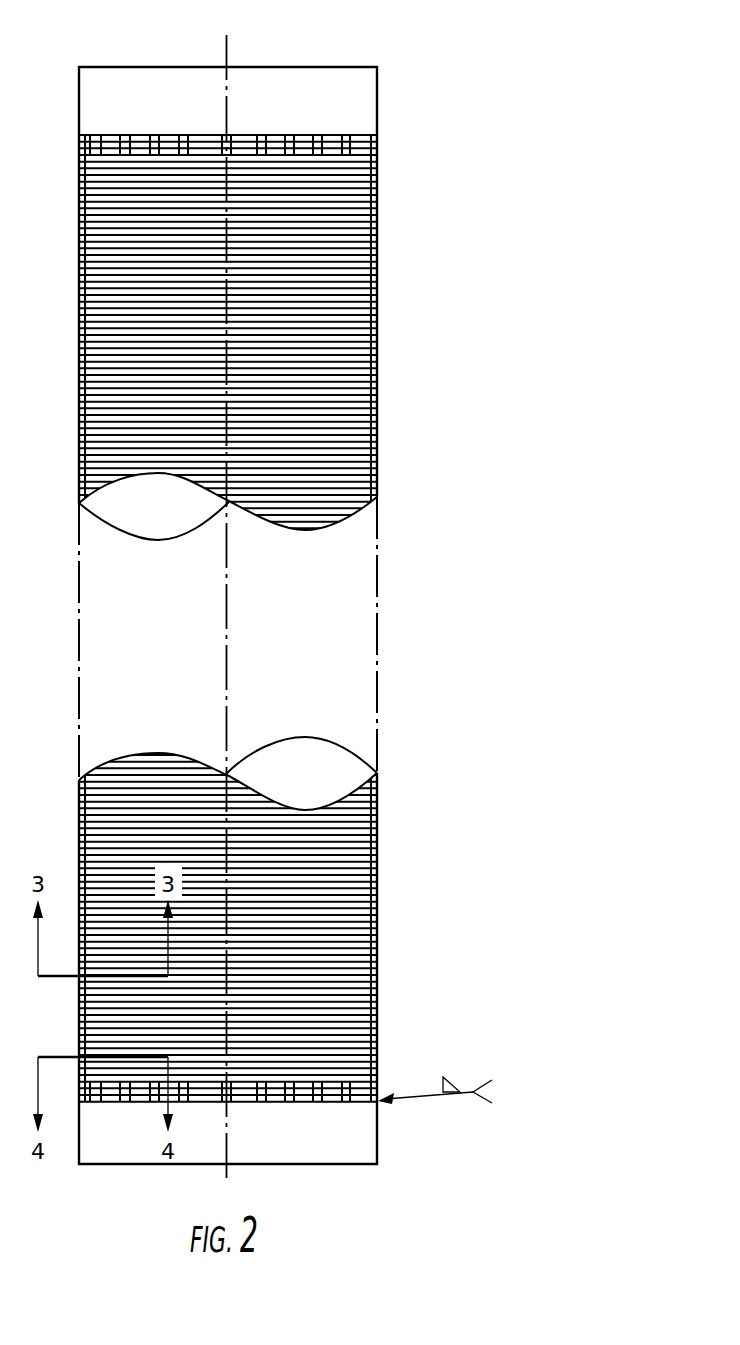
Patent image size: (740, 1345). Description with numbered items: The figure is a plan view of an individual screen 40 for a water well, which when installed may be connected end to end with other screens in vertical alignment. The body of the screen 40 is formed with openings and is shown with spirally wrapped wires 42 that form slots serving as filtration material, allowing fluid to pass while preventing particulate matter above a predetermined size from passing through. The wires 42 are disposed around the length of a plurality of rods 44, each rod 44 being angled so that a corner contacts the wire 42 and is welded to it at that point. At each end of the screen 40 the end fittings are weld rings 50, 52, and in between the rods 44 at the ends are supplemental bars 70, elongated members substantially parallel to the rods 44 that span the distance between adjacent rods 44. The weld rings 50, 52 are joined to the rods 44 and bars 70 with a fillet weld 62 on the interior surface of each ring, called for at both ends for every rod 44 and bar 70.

The screen 40 is at (320, 594).
The spirally wrapped wires 42 is at (201, 618).
The rods 44 is at (100, 328).
The weld ring 50 is at (265, 87).
The weld ring 52 is at (345, 1145).
The fillet weld 62 is at (460, 1080).
The supplemental bars 70 is at (289, 152).